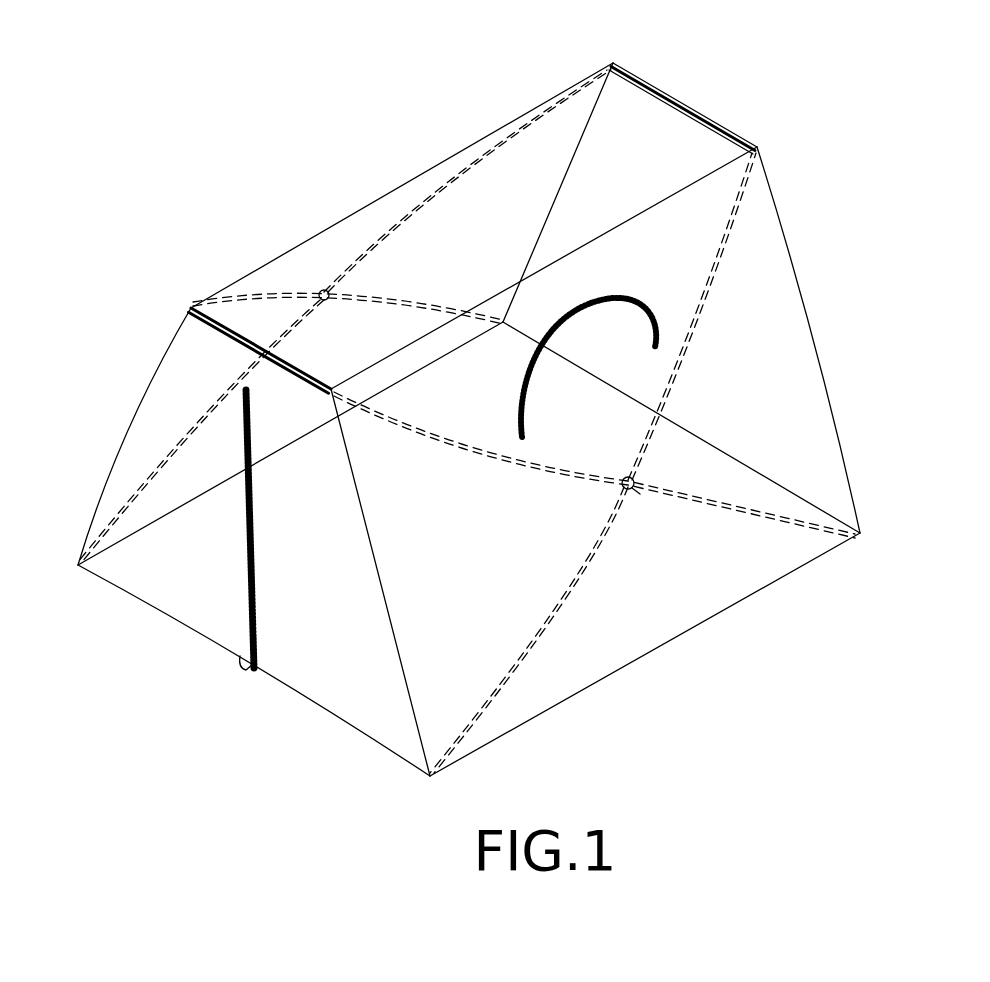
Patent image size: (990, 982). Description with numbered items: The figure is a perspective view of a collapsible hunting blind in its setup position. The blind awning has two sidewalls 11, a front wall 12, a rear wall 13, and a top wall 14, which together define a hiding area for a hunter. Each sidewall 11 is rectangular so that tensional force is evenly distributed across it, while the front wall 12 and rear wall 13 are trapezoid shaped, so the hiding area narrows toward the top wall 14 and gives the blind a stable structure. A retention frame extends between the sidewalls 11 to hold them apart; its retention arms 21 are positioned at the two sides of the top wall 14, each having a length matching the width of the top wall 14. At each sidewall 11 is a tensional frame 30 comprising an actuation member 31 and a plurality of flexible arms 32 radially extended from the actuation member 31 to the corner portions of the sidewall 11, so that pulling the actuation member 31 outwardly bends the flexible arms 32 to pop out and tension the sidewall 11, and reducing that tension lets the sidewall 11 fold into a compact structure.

The sidewall 11 is at (143, 383).
The front wall 12 is at (306, 625).
The rear wall 13 is at (787, 220).
The top wall 14 is at (525, 187).
The retention arm 21 is at (232, 330).
The tensional frame 30 is at (267, 126).
The actuation member 31 is at (327, 288).
The flexible arm 32 is at (415, 212).